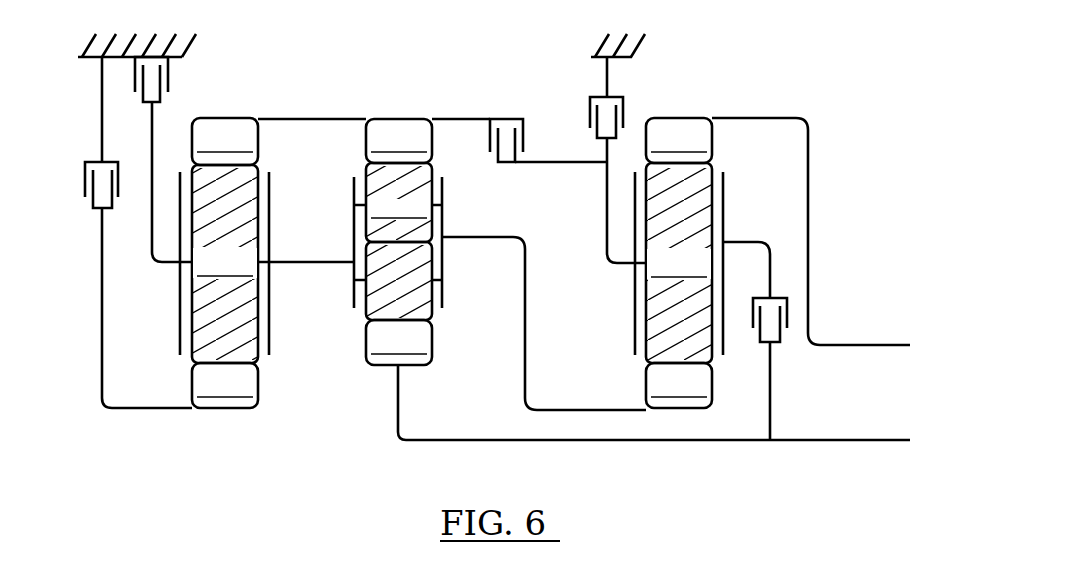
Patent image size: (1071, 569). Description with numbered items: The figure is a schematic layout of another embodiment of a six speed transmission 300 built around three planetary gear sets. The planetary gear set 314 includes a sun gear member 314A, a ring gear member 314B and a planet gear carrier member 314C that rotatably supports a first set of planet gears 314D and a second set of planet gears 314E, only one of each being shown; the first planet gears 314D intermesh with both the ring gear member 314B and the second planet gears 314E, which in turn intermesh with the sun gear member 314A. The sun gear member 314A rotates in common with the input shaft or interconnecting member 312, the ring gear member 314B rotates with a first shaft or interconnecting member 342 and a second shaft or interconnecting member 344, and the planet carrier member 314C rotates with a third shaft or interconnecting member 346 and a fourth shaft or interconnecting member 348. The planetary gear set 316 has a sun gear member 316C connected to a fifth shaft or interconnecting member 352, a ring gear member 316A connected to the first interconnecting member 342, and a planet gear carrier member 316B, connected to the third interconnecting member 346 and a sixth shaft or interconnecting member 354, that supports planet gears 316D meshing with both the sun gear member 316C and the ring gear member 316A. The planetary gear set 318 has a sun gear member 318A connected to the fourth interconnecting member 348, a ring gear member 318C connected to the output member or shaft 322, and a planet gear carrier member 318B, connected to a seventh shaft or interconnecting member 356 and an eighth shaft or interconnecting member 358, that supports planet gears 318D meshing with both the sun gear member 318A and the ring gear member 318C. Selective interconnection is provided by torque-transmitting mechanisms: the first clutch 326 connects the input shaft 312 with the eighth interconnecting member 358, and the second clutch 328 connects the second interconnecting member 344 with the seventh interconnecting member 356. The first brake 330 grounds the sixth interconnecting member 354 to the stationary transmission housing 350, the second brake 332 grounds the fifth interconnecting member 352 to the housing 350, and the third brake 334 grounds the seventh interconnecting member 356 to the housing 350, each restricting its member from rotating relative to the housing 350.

The six speed transmission 300 is at (822, 65).
The input shaft or interconnecting member 312 is at (853, 441).
The planetary gear set 314 is at (403, 286).
The sun gear member 314A is at (399, 342).
The ring gear member 314B is at (399, 141).
The planet gear carrier member 314C is at (468, 198).
The first set of planet gears 314D is at (399, 202).
The second set of planet gears 314E is at (433, 293).
The planetary gear set 316 is at (222, 302).
The ring gear member 316A is at (225, 141).
The planet gear carrier member 316B is at (178, 328).
The sun gear member 316C is at (225, 385).
The set of planet gears 316D is at (225, 264).
The planetary gear set 318 is at (683, 220).
The sun gear member 318A is at (679, 385).
The planet gear carrier member 318B is at (683, 258).
The ring gear member 318C is at (679, 140).
The set of planet gears 318D is at (679, 263).
The output member or shaft 322 is at (809, 240).
The first clutch 326 is at (773, 343).
The second clutch 328 is at (523, 130).
The first brake 330 is at (169, 76).
The second brake 332 is at (92, 162).
The third brake 334 is at (624, 110).
The first shaft or interconnecting member 342 is at (320, 119).
The second shaft or interconnecting member 344 is at (462, 119).
The third shaft or interconnecting member 346 is at (307, 262).
The fourth shaft or interconnecting member 348 is at (525, 347).
The transmission housing 350 is at (183, 50).
The fifth shaft or interconnecting member 352 is at (102, 283).
The sixth shaft or interconnecting member 354 is at (152, 221).
The seventh shaft or interconnecting member 356 is at (606, 218).
The eighth shaft or interconnecting member 358 is at (772, 272).